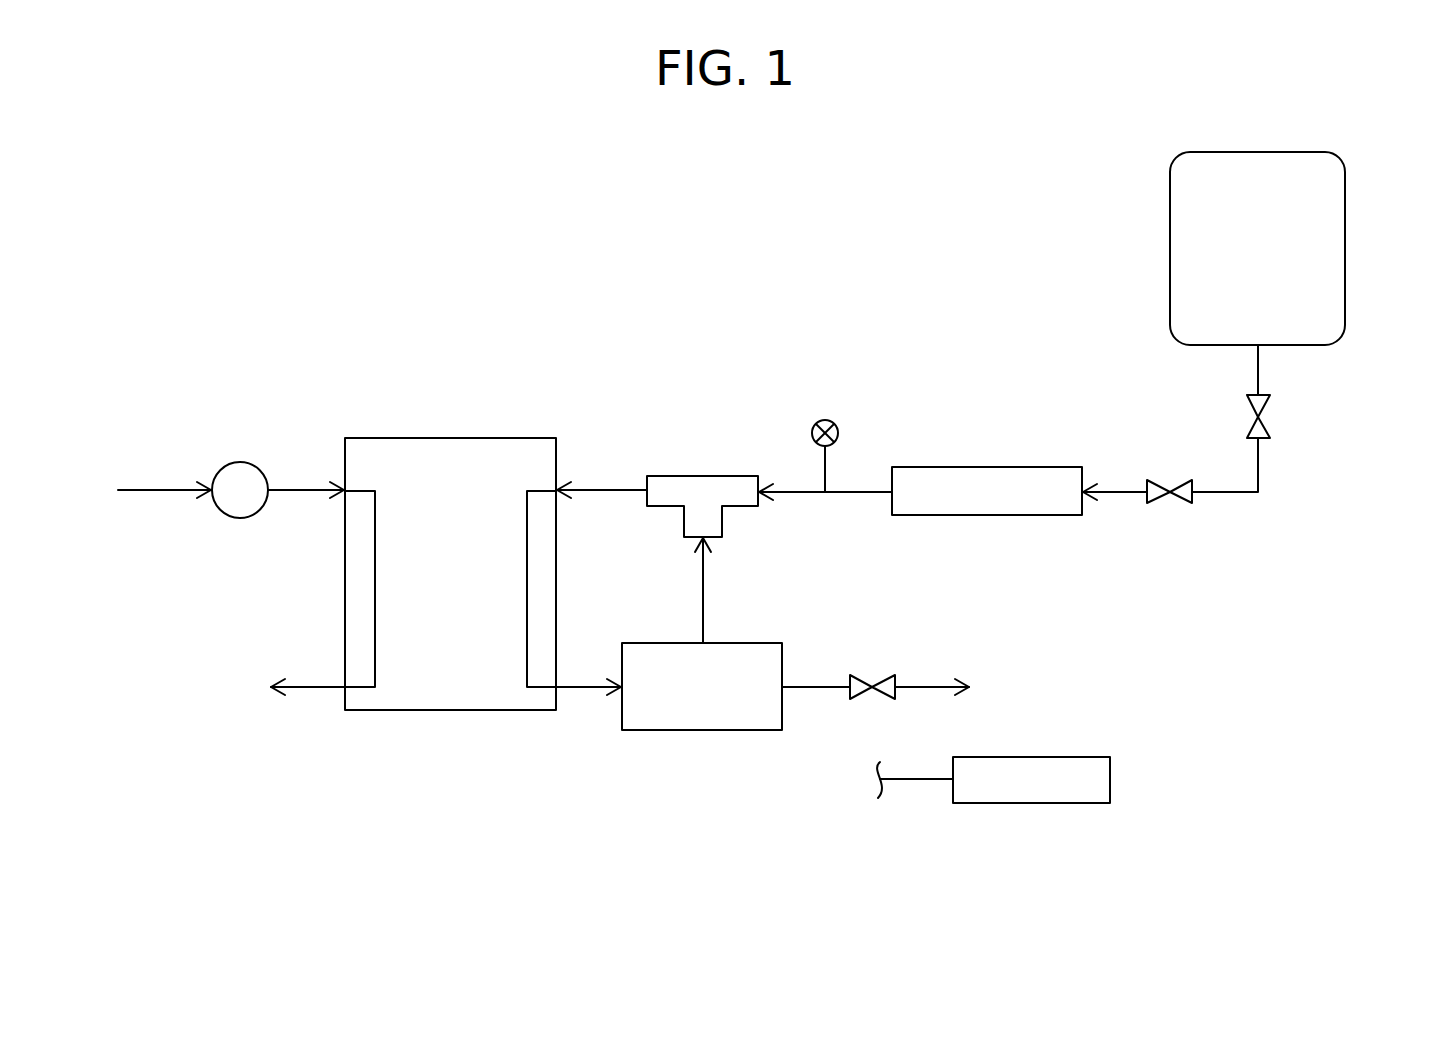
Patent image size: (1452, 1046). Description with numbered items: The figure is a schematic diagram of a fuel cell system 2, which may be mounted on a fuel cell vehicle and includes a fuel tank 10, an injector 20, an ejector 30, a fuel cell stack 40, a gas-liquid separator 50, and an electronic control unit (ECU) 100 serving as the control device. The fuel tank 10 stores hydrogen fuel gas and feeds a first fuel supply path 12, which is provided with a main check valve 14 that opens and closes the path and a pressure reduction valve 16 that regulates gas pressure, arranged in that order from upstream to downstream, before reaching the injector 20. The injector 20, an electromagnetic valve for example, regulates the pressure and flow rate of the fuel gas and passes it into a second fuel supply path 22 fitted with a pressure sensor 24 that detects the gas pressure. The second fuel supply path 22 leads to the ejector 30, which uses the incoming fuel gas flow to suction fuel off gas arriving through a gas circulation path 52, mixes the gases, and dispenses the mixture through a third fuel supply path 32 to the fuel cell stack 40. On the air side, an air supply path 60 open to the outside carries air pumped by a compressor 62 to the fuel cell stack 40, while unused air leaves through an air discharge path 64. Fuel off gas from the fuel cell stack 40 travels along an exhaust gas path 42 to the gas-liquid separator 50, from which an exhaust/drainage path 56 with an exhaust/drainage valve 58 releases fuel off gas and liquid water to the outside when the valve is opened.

The fuel cell system 2 is at (346, 330).
The fuel tank 10 is at (1345, 200).
The first fuel supply path 12 is at (1235, 493).
The main check valve 14 is at (1262, 420).
The pressure reduction valve 16 is at (1160, 500).
The injector 20 is at (1020, 467).
The second fuel supply path 22 is at (855, 493).
The pressure sensor 24 is at (835, 420).
The ejector 30 is at (720, 476).
The third fuel supply path 32 is at (598, 490).
The fuel cell stack 40 is at (460, 438).
The exhaust gas path 42 is at (585, 690).
The gas-liquid separator 50 is at (700, 730).
The gas circulation path 52 is at (703, 618).
The exhaust/drainage path 56 is at (820, 690).
The exhaust/drainage valve 58 is at (878, 680).
The air supply path 60 is at (152, 492).
The compressor 62 is at (235, 462).
The air discharge path 64 is at (312, 690).
The electronic control unit (ECU) 100 is at (1057, 757).